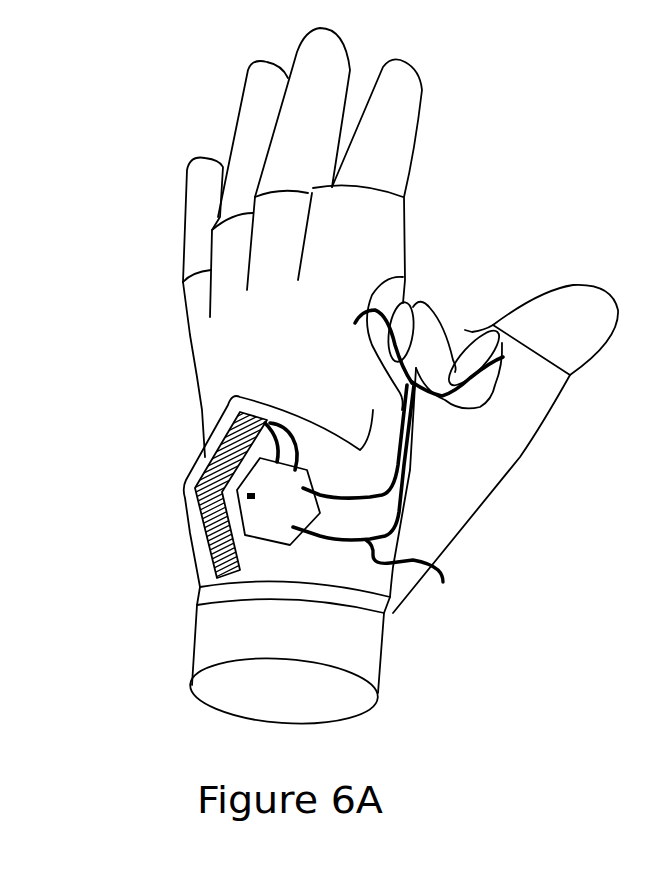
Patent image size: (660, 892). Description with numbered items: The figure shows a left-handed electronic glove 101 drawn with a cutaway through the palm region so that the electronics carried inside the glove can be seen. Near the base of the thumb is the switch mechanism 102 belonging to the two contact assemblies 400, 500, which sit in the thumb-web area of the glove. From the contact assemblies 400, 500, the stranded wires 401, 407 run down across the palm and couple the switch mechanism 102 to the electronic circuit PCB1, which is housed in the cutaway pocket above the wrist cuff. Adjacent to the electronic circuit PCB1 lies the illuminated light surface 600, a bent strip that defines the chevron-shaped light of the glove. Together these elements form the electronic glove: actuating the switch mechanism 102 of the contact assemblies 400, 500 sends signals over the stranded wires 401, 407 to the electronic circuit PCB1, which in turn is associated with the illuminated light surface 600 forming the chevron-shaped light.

The left-handed electronic glove 101 is at (193, 375).
The switch mechanism 102 is at (465, 330).
The contact assembly 400 is at (370, 313).
The stranded wire 407 is at (402, 410).
The stranded wire 401 is at (418, 580).
The contact assembly 500 is at (470, 392).
The illuminated light surface 600 is at (200, 543).
The electronic circuit PCB1 is at (270, 538).